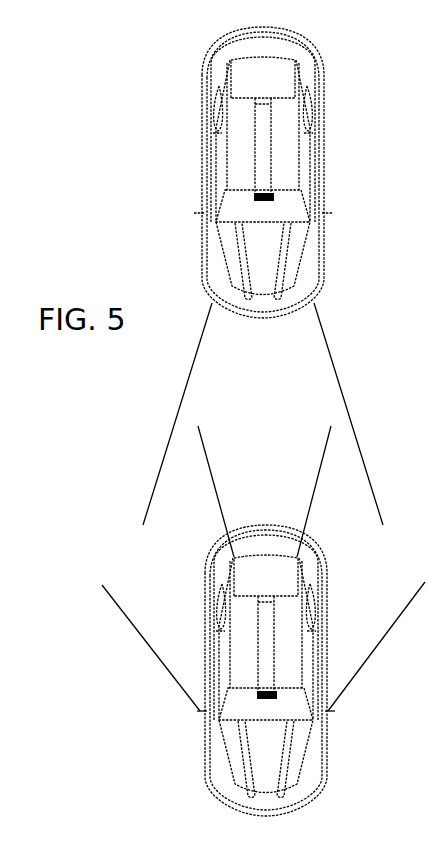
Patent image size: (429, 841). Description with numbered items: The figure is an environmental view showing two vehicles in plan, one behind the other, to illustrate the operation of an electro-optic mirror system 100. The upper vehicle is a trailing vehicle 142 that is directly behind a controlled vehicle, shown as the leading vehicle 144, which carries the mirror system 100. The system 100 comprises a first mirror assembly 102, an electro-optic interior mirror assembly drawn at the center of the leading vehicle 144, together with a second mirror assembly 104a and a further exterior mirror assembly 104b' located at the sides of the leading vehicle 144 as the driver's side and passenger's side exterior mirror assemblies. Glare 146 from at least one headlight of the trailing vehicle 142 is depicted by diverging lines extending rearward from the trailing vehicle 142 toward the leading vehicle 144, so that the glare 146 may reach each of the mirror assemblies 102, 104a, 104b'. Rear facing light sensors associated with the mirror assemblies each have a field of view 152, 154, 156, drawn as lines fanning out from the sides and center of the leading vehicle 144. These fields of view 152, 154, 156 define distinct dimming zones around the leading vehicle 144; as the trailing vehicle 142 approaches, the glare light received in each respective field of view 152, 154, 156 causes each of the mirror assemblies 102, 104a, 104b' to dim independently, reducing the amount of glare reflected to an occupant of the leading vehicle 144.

The electro-optic mirror system 100 is at (323, 717).
The first mirror assembly 102 is at (257, 689).
The second mirror assembly 104a is at (337, 712).
The left side sensor 104b' is at (157, 705).
The trailing vehicle 142 is at (314, 66).
The leading vehicle 144 is at (319, 781).
The glare 146 is at (344, 395).
The field of view 152 is at (118, 601).
The field of view 154 is at (394, 615).
The field of view 156 is at (317, 475).